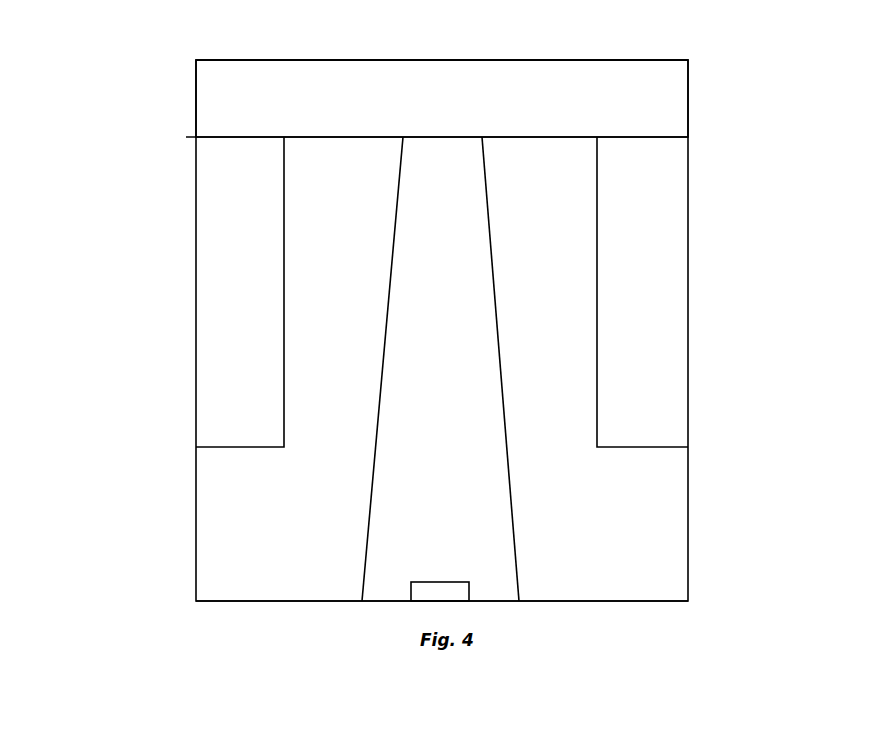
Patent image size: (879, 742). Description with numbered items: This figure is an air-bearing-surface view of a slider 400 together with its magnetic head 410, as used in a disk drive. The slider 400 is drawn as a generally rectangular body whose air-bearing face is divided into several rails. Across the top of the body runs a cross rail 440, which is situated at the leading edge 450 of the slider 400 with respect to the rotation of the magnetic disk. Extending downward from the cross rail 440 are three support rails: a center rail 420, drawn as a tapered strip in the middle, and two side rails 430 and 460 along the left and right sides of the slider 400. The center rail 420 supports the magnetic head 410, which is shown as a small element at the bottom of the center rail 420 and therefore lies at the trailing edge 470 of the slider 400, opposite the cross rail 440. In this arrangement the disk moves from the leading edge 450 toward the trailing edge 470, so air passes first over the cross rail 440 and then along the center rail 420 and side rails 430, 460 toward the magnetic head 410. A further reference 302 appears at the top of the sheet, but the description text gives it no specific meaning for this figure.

The slider 400 is at (64, 556).
The layer 302 is at (438, 68).
The magnetic head 410 is at (431, 591).
The center rail 420 is at (413, 436).
The side rail 430 is at (235, 263).
The cross rail 440 is at (236, 90).
The leading edge 450 is at (265, 61).
The side rail 460 is at (665, 283).
The trailing edge 470 is at (596, 602).